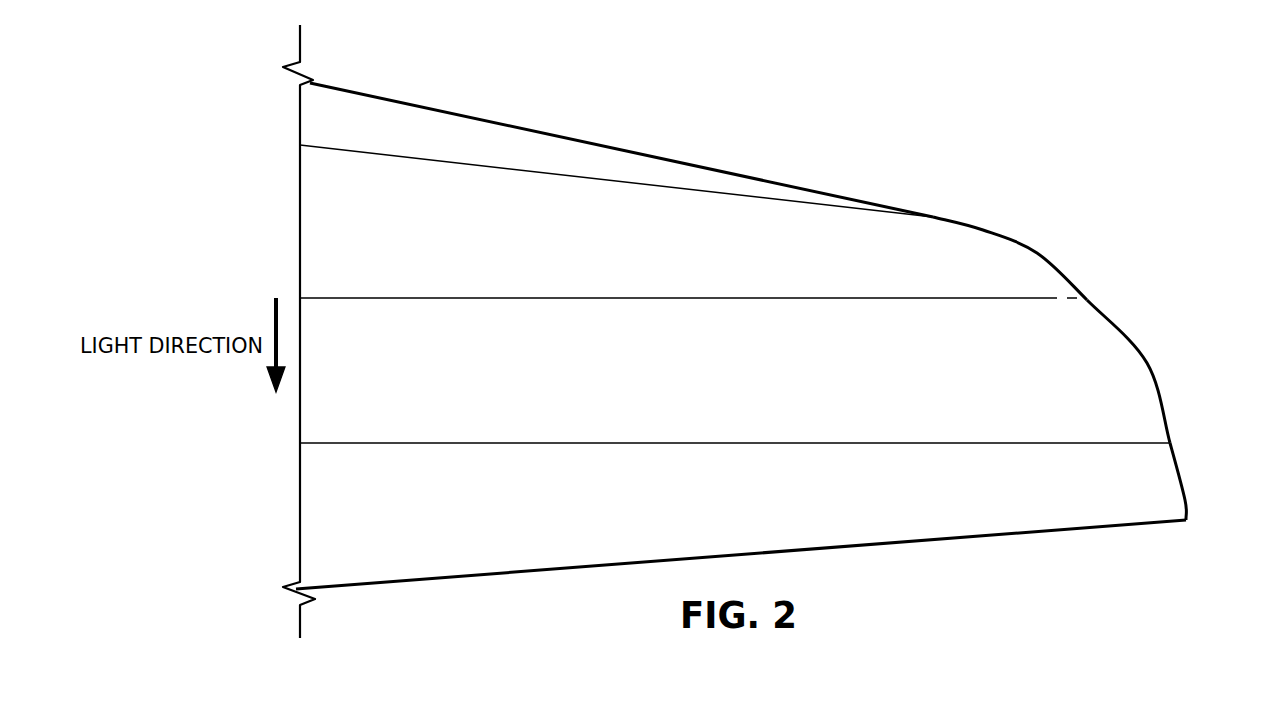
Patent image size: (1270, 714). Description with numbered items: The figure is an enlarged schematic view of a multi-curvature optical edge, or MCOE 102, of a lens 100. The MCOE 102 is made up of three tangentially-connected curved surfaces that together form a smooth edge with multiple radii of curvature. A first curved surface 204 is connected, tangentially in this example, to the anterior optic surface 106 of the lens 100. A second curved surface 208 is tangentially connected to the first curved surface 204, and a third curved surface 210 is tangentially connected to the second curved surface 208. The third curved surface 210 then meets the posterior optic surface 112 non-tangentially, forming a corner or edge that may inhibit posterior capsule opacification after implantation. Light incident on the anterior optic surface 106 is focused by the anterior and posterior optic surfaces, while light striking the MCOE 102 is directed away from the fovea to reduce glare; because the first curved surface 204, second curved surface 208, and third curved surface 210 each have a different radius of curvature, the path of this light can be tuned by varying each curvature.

The lens 100 is at (729, 387).
The multi-curvature optical edge (MCOE) 102 is at (770, 331).
The anterior optic surface 106 is at (683, 160).
The posterior optic surface 112 is at (922, 545).
The first curved surface 204 is at (1040, 252).
The second curved surface 208 is at (1148, 365).
The third curved surface 210 is at (1183, 480).